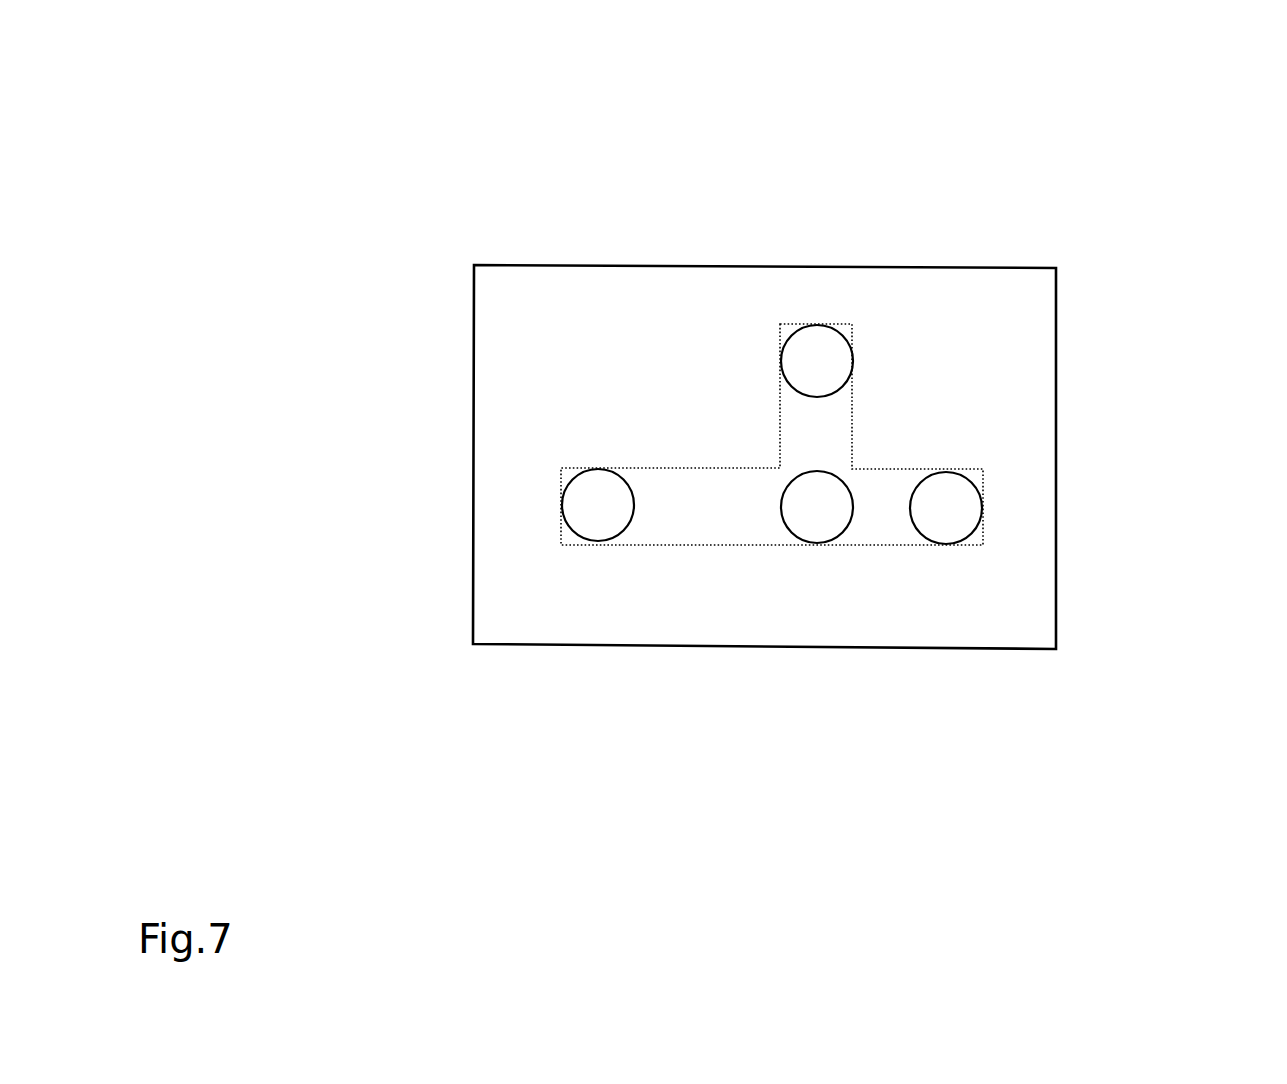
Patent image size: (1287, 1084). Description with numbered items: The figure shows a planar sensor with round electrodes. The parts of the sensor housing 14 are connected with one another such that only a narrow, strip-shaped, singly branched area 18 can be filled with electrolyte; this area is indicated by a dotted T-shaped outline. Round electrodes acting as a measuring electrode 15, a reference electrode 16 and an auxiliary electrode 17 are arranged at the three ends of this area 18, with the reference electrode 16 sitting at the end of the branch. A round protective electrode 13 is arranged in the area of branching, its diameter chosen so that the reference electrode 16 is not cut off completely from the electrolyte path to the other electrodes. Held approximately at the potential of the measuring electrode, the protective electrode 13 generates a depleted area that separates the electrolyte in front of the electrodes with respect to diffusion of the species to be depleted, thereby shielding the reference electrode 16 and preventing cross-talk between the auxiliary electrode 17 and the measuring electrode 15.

The protective electrode 13 is at (823, 515).
The sensor housing 14 is at (1043, 268).
The measuring electrode 15 is at (953, 516).
The reference electrode 16 is at (809, 369).
The auxiliary electrode 17 is at (605, 528).
The singly branched area 18 is at (837, 427).